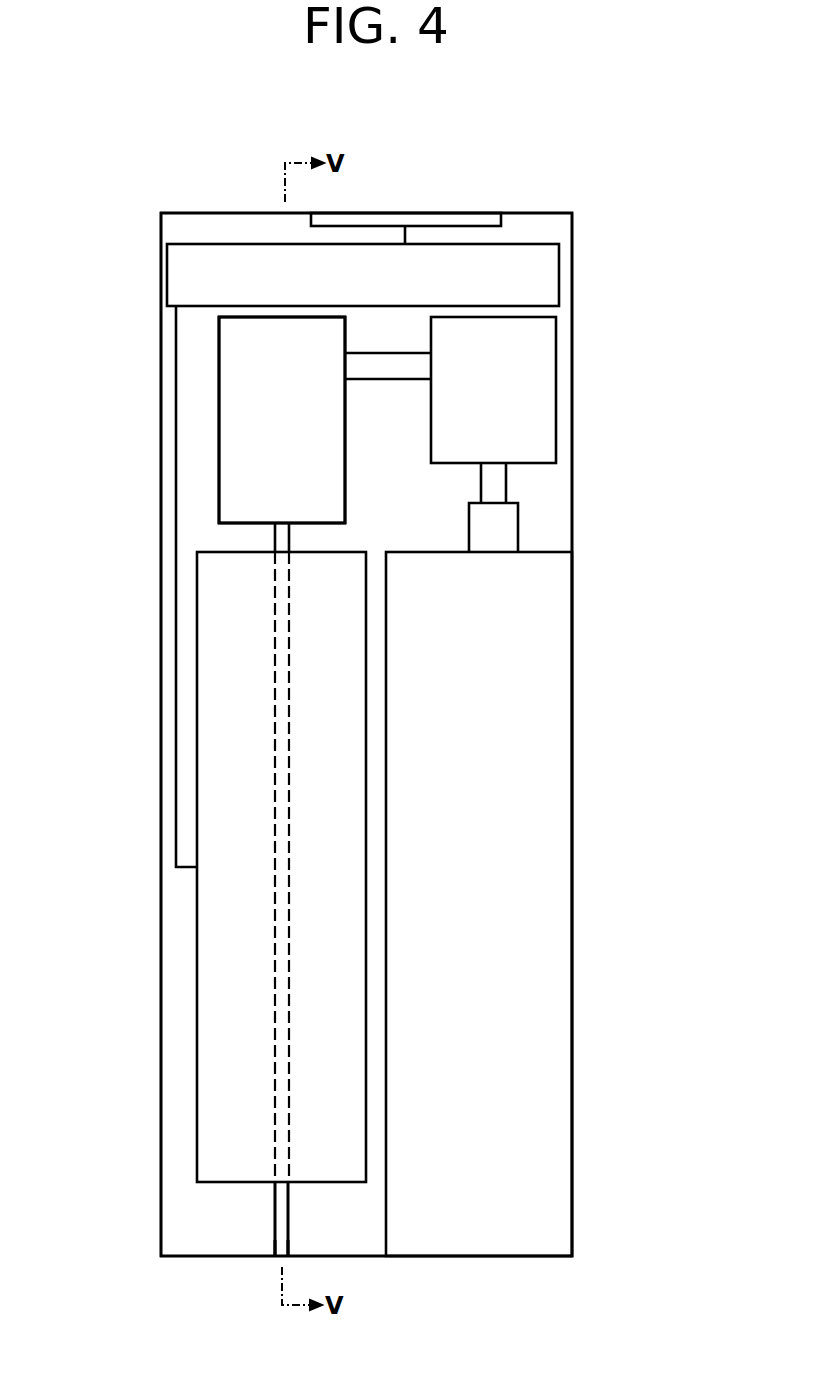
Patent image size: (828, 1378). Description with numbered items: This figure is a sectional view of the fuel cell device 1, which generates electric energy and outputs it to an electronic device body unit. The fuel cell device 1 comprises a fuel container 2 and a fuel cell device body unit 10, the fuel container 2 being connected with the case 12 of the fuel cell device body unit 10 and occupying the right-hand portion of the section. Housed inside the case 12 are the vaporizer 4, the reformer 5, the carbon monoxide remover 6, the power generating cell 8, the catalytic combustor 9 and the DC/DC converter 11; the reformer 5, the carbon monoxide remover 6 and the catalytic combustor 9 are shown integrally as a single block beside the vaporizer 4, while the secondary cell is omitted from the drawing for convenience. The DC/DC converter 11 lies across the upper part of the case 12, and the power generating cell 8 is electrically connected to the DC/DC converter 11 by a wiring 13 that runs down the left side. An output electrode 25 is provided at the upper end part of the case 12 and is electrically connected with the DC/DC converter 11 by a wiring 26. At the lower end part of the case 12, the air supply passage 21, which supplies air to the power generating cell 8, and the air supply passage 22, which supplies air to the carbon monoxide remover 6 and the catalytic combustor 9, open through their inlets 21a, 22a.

The fuel cell device 1 is at (626, 99).
The fuel container 2 is at (555, 691).
The vaporizer 4 is at (542, 389).
The reformer 5 is at (235, 428).
The carbon monoxide remover 6 is at (282, 420).
The catalytic combustor 9 is at (282, 420).
The power generating cell 8 is at (210, 1052).
The fuel cell device body unit 10 is at (570, 489).
The case 12 is at (366, 734).
The DC/DC converter 11 is at (548, 274).
The wiring 13 is at (187, 647).
The air supply passage 21 is at (274, 1230).
The air supply passage 22 is at (281, 1219).
The inlet 21a is at (277, 1258).
The inlet 22a is at (281, 1248).
The output electrode 25 is at (481, 218).
The wiring 26 is at (407, 237).